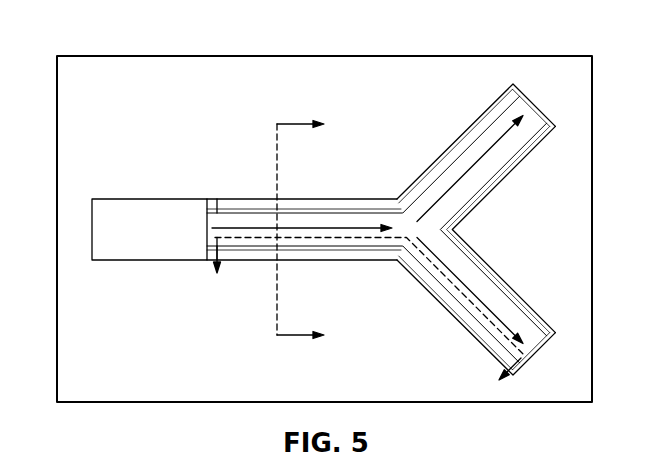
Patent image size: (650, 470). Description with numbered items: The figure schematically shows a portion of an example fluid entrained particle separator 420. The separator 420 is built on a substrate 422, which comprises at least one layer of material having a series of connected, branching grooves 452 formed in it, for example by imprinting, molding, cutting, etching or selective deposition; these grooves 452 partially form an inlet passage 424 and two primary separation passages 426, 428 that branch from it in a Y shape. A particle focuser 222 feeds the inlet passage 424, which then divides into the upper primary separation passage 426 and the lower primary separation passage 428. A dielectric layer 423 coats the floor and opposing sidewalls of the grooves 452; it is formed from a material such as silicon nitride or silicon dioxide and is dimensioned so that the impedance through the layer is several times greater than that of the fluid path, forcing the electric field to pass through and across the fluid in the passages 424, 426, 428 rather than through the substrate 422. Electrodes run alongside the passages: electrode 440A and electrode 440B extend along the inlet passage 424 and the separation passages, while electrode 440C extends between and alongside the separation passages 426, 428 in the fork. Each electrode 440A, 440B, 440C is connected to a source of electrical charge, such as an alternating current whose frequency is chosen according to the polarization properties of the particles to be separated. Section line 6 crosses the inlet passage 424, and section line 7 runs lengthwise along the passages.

The fluid entrained particle separator 420 is at (110, 16).
The substrate 422 is at (198, 56).
The particle focuser 222 is at (142, 199).
The inlet passage 424 is at (355, 187).
The primary separation passage 426 is at (482, 100).
The primary separation passage 428 is at (454, 335).
The electrode 440A is at (218, 212).
The electrode 440B is at (343, 250).
The electrode 440C is at (490, 196).
The grooves 452 is at (263, 199).
The dielectric layer 423 is at (263, 262).
The section line 6- 6 is at (311, 234).
The section line 7- 7 is at (366, 318).